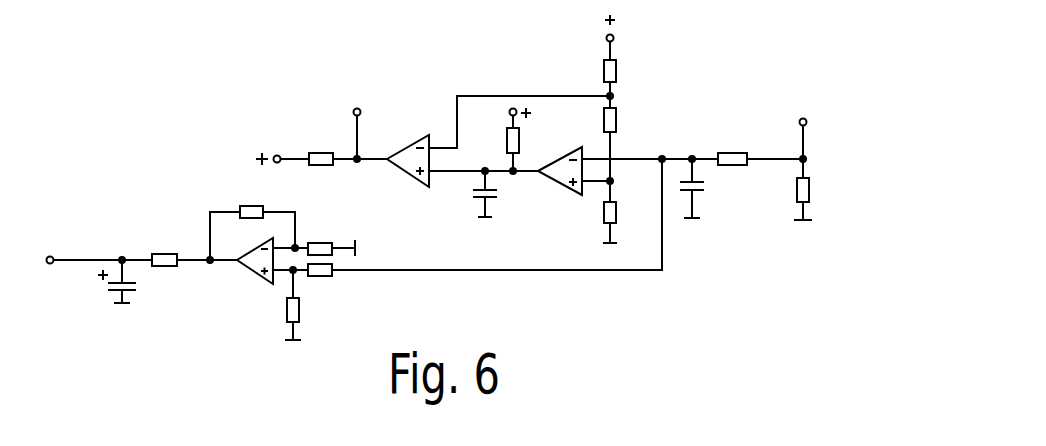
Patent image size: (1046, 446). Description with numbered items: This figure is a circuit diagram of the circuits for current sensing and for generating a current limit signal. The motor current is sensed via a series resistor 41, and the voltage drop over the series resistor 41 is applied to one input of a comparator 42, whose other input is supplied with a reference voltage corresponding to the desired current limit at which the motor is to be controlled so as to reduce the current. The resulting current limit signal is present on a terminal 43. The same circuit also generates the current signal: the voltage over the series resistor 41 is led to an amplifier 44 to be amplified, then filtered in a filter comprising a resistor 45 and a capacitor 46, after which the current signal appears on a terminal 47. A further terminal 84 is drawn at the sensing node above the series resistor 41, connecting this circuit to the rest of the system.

The series resistor 41 is at (809, 190).
The comparator 42 is at (558, 187).
The terminal 43 is at (359, 109).
The amplifier 44 is at (253, 273).
The resistor 45 is at (168, 254).
The capacitor 46 is at (125, 293).
The terminal 47 is at (52, 257).
The terminal 84 is at (805, 119).